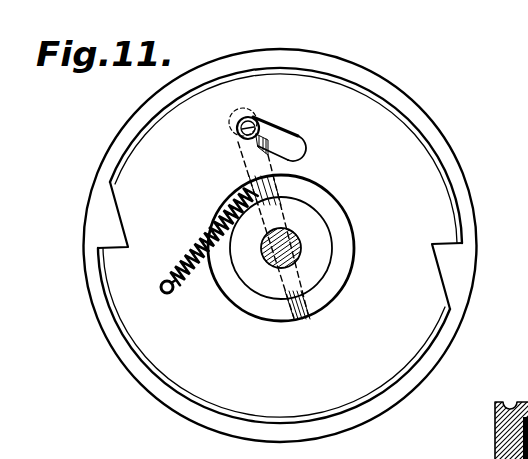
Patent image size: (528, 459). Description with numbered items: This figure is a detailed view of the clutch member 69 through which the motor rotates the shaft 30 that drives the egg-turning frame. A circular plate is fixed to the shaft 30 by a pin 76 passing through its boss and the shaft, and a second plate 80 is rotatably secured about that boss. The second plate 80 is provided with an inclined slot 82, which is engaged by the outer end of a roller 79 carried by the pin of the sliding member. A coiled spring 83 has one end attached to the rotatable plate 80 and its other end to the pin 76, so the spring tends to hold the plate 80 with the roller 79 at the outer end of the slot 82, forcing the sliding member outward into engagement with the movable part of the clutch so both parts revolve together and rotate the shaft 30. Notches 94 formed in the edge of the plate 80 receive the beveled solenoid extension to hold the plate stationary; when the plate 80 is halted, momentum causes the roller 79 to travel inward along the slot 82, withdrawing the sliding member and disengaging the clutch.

The shaft 30 is at (263, 258).
The clutch member 69 is at (461, 310).
The pin 76 is at (305, 318).
The roller 79 is at (237, 142).
The second plate 80 is at (278, 270).
The inclined slot 82 is at (382, 155).
The coiled spring 83 is at (190, 250).
The notches 94 is at (440, 270).